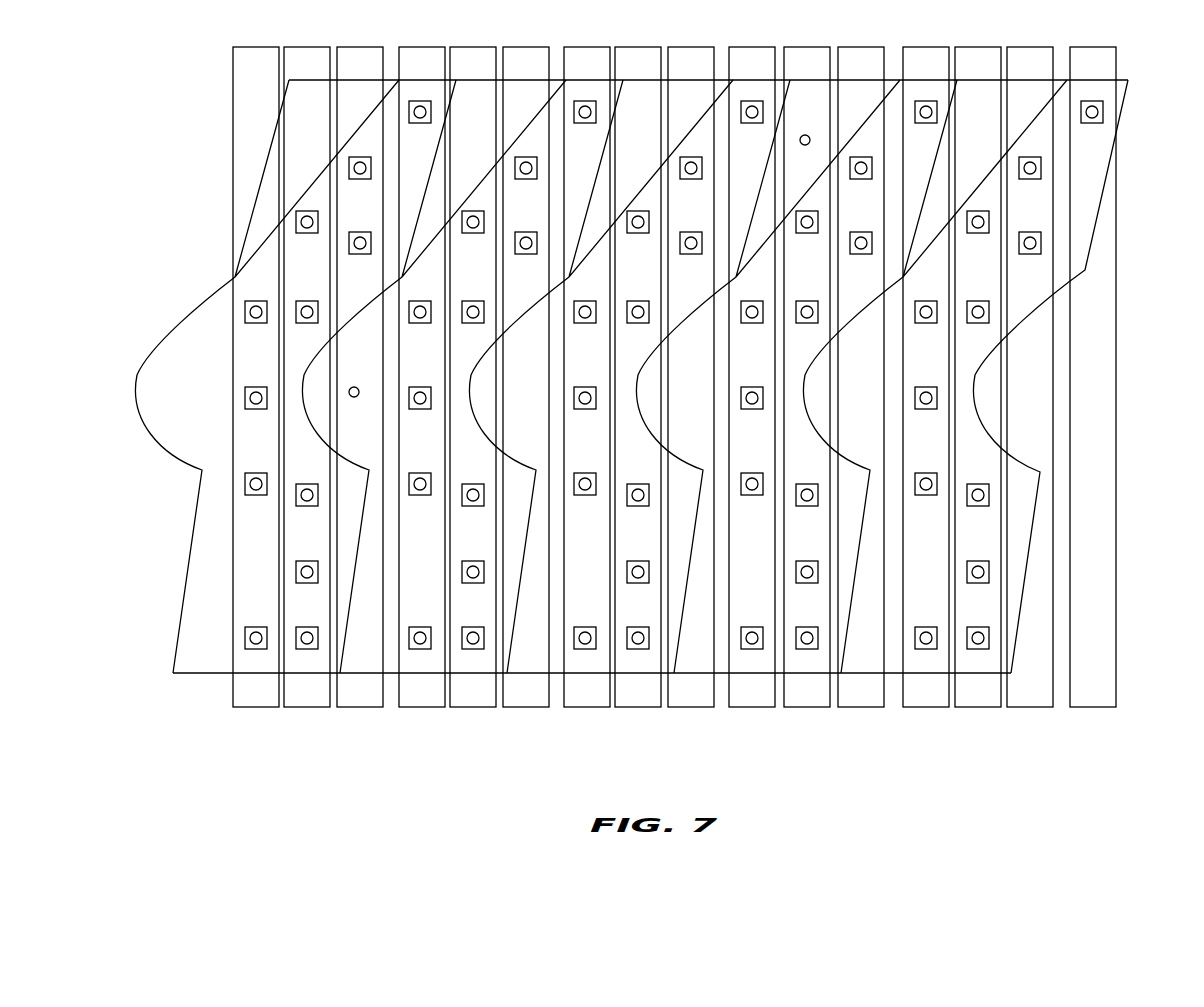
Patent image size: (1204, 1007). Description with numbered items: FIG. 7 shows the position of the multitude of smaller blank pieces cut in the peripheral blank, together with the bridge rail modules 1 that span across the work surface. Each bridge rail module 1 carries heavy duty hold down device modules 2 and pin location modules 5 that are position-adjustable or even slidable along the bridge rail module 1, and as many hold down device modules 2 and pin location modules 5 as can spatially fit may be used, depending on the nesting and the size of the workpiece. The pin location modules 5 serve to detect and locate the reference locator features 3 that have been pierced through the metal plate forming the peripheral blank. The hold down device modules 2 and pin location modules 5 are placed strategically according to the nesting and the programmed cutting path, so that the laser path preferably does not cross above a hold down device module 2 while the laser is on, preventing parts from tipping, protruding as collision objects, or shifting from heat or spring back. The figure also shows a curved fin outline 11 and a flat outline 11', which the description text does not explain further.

The bridge rail module 1 is at (1119, 64).
The hold down device module 2 is at (418, 648).
The reference locator feature 3 is at (809, 130).
The pin location module 5 is at (634, 584).
The curved fin 11 is at (249, 376).
The flat fin 11' is at (1081, 376).